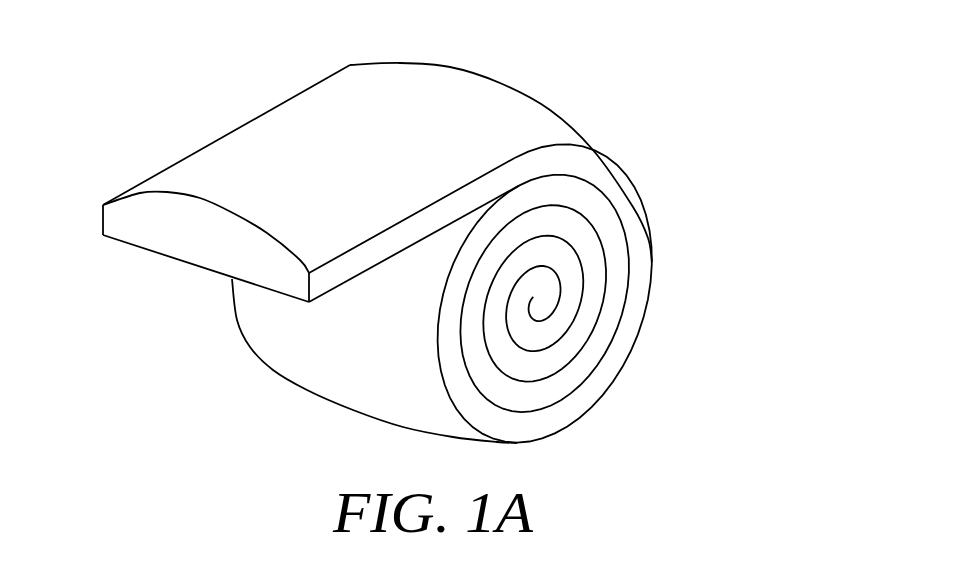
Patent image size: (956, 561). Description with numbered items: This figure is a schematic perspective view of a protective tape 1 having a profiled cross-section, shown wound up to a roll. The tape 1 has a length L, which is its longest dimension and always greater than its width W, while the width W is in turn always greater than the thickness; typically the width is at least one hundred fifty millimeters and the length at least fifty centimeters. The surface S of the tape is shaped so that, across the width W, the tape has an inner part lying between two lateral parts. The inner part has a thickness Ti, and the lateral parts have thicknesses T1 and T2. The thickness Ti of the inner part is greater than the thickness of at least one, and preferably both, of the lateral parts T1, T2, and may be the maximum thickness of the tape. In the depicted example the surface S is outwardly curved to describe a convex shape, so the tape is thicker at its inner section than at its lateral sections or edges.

The protective tape 1 is at (373, 234).
The surface of the tape S is at (307, 134).
The length L is at (618, 193).
The thickness of a lateral part T1 is at (97, 203).
The thickness of the inner part Ti is at (197, 199).
The width W is at (310, 315).
The thickness of a lateral part T2 is at (353, 258).